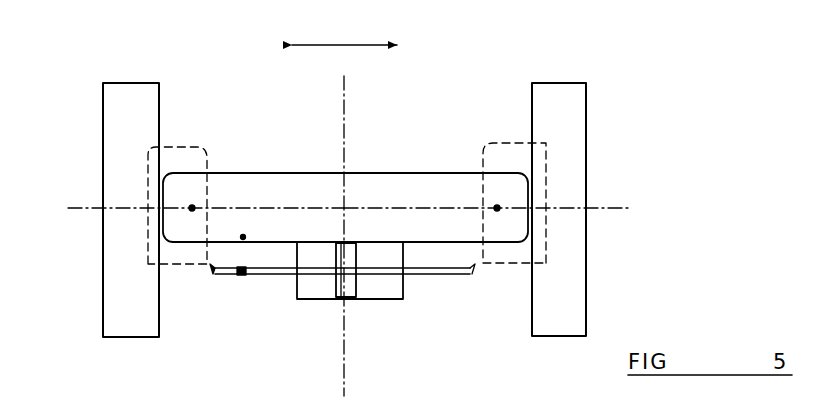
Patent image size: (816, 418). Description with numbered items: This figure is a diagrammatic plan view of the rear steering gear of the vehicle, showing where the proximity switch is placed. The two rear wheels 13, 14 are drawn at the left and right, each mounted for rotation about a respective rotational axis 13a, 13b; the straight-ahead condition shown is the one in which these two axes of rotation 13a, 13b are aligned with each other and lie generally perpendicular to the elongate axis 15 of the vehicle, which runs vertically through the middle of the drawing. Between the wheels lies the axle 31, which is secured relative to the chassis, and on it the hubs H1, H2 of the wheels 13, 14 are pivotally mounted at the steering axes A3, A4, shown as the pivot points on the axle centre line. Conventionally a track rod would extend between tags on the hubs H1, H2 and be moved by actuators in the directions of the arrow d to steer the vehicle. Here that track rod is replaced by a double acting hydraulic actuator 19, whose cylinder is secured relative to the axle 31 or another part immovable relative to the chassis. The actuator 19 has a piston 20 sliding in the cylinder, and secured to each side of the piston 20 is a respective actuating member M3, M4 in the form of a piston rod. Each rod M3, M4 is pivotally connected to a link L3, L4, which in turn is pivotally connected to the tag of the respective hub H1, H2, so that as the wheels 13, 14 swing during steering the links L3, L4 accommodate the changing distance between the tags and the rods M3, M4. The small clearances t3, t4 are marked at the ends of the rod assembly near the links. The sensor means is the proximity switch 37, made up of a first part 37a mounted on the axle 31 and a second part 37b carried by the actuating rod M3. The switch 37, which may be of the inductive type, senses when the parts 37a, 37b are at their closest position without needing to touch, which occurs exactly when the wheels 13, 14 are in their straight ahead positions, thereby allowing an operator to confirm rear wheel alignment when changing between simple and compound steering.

The rear wheel 13 is at (108, 112).
The rotational axis 13a is at (83, 207).
The rotational axis 13b is at (598, 207).
The rear wheel 14 is at (586, 108).
The elongate axis 15 is at (344, 128).
The double acting hydraulic actuator 19 is at (329, 302).
The piston 20 is at (356, 254).
The axle 31 is at (287, 192).
The proximity switch 37 is at (218, 277).
The first part 37a is at (244, 237).
The second part 37b is at (237, 278).
The hub H1 is at (178, 146).
The hub H2 is at (512, 146).
The steering axis A3 is at (193, 206).
The steering axis A4 is at (496, 207).
The link L3 is at (218, 270).
The link L4 is at (463, 268).
The actuating member M3 is at (282, 276).
The actuating member M4 is at (415, 274).
The left clearance t3 is at (206, 264).
The right clearance t4 is at (483, 262).
The arrow d is at (343, 44).